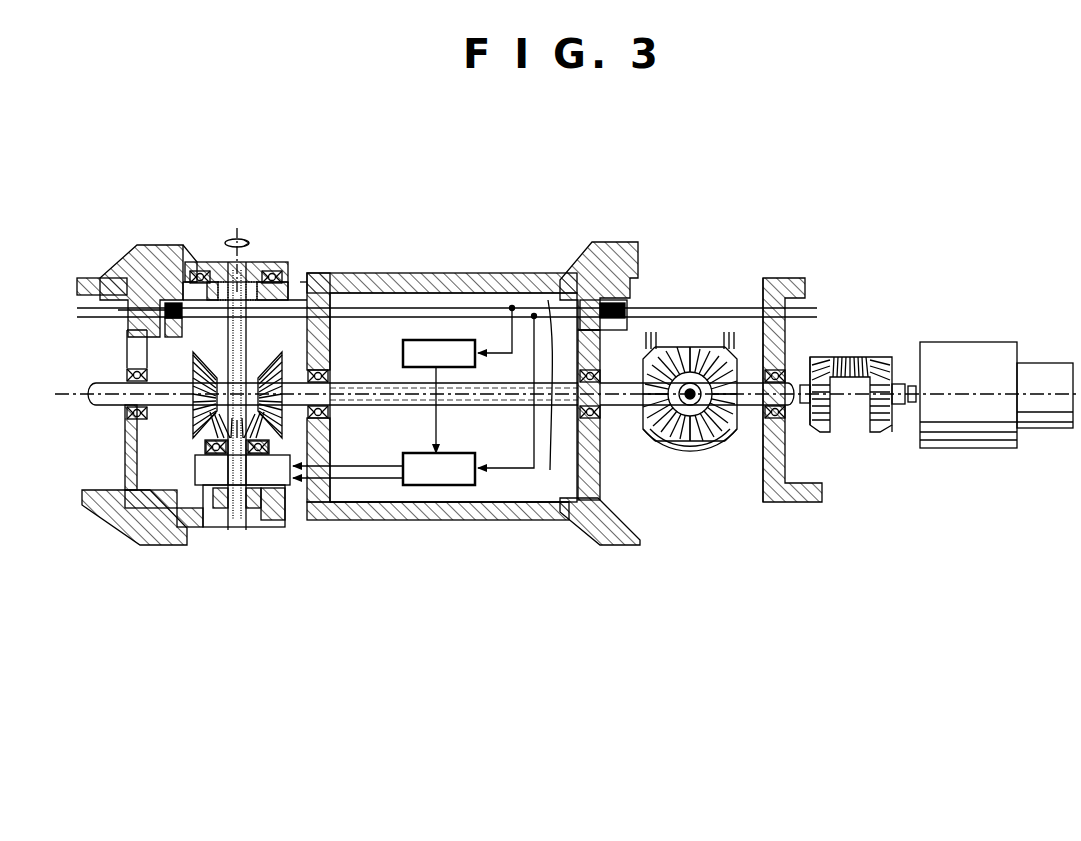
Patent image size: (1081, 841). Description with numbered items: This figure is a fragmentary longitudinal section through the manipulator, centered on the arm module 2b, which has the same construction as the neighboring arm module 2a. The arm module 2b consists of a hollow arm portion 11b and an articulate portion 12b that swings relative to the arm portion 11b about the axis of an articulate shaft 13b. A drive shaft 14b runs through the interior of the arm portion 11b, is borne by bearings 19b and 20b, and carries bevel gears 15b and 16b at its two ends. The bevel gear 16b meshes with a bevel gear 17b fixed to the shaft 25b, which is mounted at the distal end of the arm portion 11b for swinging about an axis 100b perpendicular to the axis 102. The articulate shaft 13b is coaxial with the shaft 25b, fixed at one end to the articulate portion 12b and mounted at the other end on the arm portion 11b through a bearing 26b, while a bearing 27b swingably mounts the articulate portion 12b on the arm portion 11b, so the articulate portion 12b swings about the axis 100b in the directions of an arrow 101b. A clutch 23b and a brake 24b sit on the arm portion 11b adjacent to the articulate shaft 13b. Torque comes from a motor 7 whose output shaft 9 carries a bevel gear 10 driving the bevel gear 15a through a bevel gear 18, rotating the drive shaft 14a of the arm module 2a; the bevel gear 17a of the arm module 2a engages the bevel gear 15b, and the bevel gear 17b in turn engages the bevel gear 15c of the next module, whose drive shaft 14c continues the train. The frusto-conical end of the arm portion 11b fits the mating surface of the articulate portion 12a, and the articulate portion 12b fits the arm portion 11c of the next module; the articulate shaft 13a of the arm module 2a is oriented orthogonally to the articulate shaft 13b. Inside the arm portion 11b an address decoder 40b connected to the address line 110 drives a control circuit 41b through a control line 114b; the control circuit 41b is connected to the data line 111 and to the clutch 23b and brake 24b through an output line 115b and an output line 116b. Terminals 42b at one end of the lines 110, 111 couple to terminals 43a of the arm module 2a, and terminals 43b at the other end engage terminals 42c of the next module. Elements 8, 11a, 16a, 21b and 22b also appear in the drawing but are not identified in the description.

The arm module 2a is at (815, 502).
The arm module 2b is at (482, 522).
The motor 7 is at (946, 348).
The motor shaft/encoder 8 is at (1046, 368).
The output shaft 9 is at (898, 383).
The bevel gear 10 is at (888, 432).
The housing wall 11a is at (772, 502).
The arm portion 11b is at (436, 520).
The arm portion 11c is at (125, 518).
The articulate portion 12a is at (632, 522).
The articulate portion 12b is at (148, 272).
The articulate shaft 13a is at (690, 389).
The articulate shaft 13b is at (237, 520).
The drive shaft 14a is at (795, 406).
The drive shaft 14b is at (556, 408).
The drive shaft 14c is at (110, 405).
The bevel gear 15a is at (820, 420).
The bevel gear 15b is at (645, 430).
The bevel gear 15c is at (127, 376).
The bevel gear 16a is at (712, 450).
The bevel gear 16b is at (268, 372).
The bevel gear 17a is at (690, 441).
The bevel gear 17b is at (205, 445).
The bevel gear 18 is at (848, 360).
The bearing 19b is at (550, 310).
The bearing 20b is at (330, 383).
The bearing 21b is at (224, 280).
The sleeve 22b is at (222, 464).
The clutch 23b is at (222, 505).
The brake 24b is at (232, 510).
The articulate shaft 25b is at (288, 300).
The bearing 26b is at (270, 510).
The bearing 27b is at (200, 270).
The address decoder 40b is at (418, 340).
The control circuit 41b is at (484, 490).
The terminals 42b is at (594, 266).
The terminals 42c is at (118, 311).
The terminals 43a is at (625, 308).
The terminals 43b is at (120, 290).
The axis 100b is at (252, 252).
The arrow 101b is at (238, 240).
The axis 102 is at (80, 393).
The address line 110 is at (458, 306).
The data line 111 is at (492, 315).
The control line 114b is at (437, 420).
The output line 115b is at (372, 470).
The output line 116b is at (362, 480).